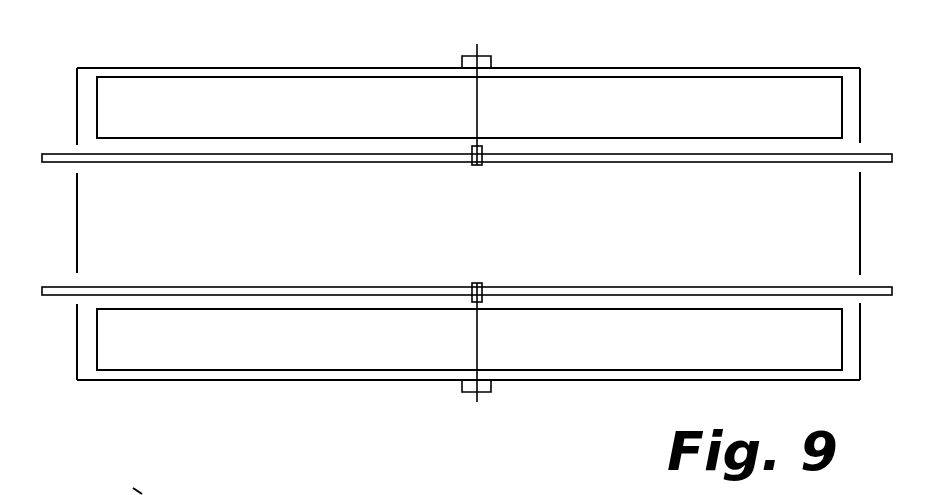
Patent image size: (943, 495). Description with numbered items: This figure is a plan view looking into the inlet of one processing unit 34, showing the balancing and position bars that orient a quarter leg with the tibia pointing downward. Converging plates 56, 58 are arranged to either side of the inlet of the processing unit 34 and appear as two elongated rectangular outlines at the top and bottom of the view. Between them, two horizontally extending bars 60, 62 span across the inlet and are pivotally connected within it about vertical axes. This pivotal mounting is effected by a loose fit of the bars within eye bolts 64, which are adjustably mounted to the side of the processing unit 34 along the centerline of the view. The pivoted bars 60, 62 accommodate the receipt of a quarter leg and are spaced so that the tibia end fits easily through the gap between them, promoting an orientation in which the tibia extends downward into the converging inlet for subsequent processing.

The processing unit 34 is at (286, 68).
The converging plate 56 is at (694, 93).
The converging plate 58 is at (628, 352).
The horizontally extending bar 60 is at (57, 154).
The horizontally extending bar 62 is at (57, 287).
The eye bolt 64 is at (477, 107).